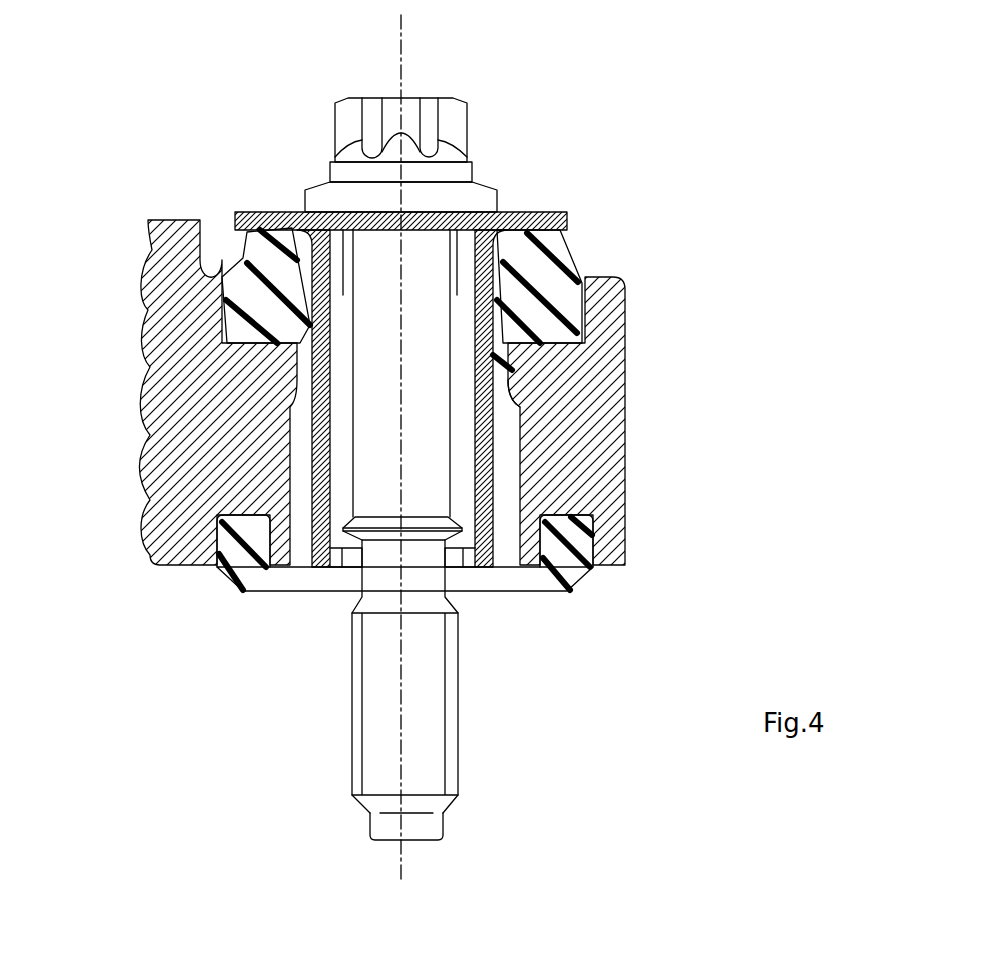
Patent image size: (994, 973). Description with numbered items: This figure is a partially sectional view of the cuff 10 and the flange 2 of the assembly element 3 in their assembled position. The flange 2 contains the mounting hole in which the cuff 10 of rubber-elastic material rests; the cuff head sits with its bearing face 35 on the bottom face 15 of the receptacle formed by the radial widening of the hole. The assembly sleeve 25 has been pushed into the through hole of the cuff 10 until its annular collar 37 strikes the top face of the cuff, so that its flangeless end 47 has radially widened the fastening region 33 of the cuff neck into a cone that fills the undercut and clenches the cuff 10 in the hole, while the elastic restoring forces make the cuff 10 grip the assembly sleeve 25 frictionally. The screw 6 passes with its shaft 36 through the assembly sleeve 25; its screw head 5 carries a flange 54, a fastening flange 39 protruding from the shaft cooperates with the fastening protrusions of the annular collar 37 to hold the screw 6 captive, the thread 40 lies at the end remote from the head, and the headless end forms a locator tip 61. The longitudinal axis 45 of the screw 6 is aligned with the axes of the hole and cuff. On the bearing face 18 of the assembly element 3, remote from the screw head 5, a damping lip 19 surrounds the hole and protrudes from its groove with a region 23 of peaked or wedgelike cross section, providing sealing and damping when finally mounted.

The flange 2 is at (610, 312).
The assembly element 3 is at (627, 360).
The screw head 5 is at (348, 112).
The screw 6 is at (380, 425).
The cuff 10 is at (564, 252).
The bottom face of the receptacle 15 is at (242, 307).
The bearing face 18 is at (171, 568).
The damping lip 19 is at (583, 578).
The region of peaked or wedgelike cross section 23 is at (240, 572).
The assembly sleeve 25 is at (485, 433).
The fastening region 33 is at (519, 387).
The bearing face of the cuff head 35 is at (252, 361).
The shaft 36 is at (428, 470).
The annular collar 37 is at (563, 213).
The fastening flange 39 is at (413, 535).
The thread 40 is at (457, 715).
The longitudinal axis of the screw 45 is at (402, 43).
The flangeless end 47 is at (327, 568).
The flange of the screw head 54 is at (497, 200).
The locator tip 61 is at (433, 828).